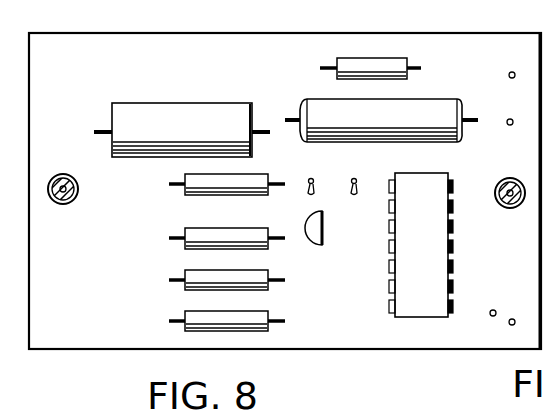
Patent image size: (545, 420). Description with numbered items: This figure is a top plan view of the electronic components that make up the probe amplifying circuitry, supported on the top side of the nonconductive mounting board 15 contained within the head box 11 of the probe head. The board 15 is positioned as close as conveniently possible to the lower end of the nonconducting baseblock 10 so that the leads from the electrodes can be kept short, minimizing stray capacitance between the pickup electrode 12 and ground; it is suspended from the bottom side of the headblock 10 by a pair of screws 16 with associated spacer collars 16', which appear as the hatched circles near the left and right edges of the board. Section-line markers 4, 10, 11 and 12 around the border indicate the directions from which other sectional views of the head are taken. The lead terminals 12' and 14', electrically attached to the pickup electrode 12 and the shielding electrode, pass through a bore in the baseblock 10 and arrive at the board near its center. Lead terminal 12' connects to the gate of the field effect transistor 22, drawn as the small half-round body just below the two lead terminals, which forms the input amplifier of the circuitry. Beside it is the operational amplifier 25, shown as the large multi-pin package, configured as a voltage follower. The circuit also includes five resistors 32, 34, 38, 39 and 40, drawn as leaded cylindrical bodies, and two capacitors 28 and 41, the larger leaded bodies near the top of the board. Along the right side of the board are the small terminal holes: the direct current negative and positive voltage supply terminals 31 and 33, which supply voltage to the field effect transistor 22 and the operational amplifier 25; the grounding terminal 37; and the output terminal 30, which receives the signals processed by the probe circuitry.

The section line 4- 4 is at (544, 193).
The nonconducting baseblock 10 is at (113, 21).
The head box 11 is at (306, 21).
The pickup electrode 12 is at (489, 197).
The lead terminal 12' is at (321, 174).
The lead terminal 14' is at (368, 174).
The nonconductive mounting board 15 is at (78, 294).
The screw 16 is at (289, 185).
The spacer collar 16' is at (290, 209).
The field effect transistor 22 is at (318, 241).
The operational amplifier 25 is at (431, 238).
The capacitor 28 is at (388, 124).
The output terminal 30 is at (512, 120).
The negative voltage supply terminal 31 is at (495, 311).
The resistor 32 is at (192, 230).
The positive voltage supply terminal 33 is at (514, 73).
The resistor 34 is at (370, 61).
The grounding terminal 37 is at (520, 314).
The resistor 38 is at (190, 313).
The resistor 39 is at (200, 192).
The resistor 40 is at (193, 274).
The capacitor 41 is at (190, 129).